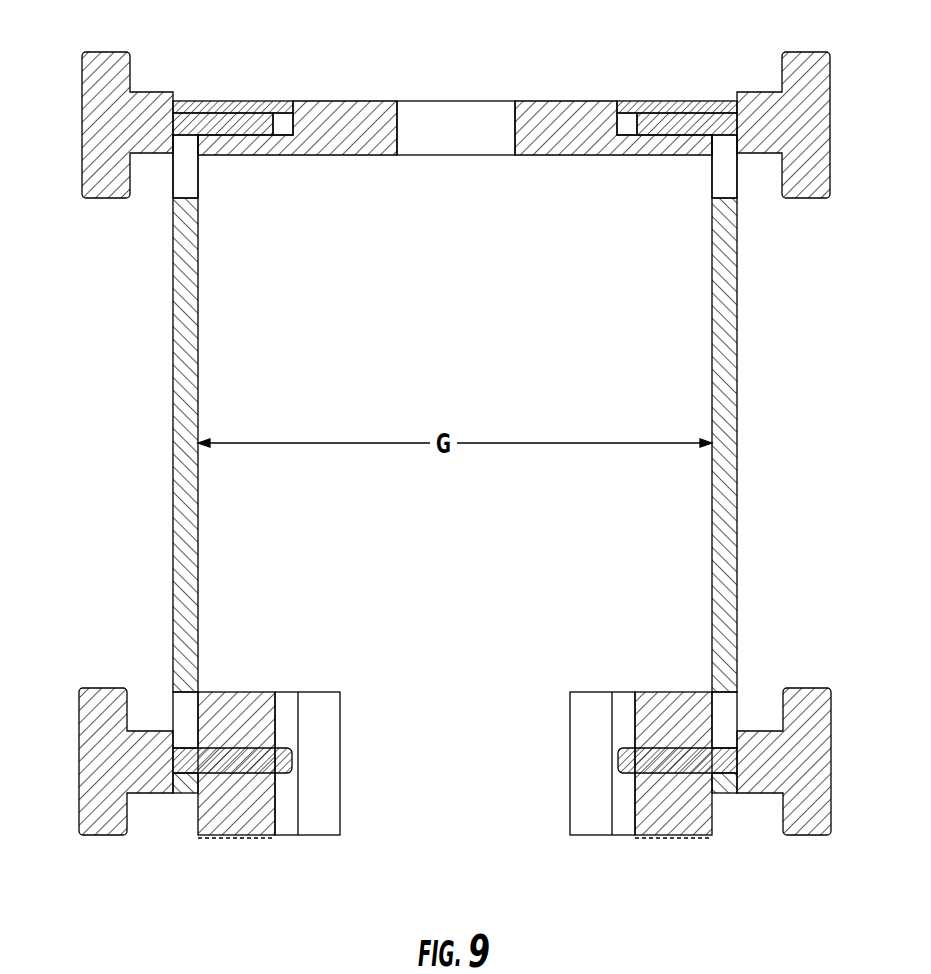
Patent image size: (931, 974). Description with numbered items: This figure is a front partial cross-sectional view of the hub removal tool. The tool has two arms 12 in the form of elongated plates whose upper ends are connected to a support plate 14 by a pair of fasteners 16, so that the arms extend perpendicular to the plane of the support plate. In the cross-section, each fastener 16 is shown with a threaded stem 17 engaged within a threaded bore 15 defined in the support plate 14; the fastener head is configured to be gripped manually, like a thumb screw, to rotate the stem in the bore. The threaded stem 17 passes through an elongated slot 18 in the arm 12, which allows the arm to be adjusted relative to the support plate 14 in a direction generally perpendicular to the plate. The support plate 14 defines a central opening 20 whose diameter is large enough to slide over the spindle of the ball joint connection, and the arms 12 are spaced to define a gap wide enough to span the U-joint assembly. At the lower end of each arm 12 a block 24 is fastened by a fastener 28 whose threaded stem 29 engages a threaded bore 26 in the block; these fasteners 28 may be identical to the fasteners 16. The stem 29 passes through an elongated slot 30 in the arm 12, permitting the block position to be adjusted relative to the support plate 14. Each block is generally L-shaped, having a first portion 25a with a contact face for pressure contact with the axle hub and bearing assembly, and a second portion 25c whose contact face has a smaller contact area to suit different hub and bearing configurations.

The arm 12 is at (192, 347).
The support plate 14 is at (340, 101).
The threaded bore 15 is at (301, 124).
The fastener 16 is at (93, 87).
The threaded stem 17 is at (240, 122).
The elongated slot 18 is at (186, 197).
The central opening 20 is at (457, 121).
The block 24 is at (258, 693).
The first portion 25a is at (320, 703).
The second portion 25c is at (223, 710).
The threaded bore 26 is at (233, 768).
The fastener 28 is at (80, 690).
The threaded stem 29 is at (190, 766).
The elongated slot 30 is at (180, 707).